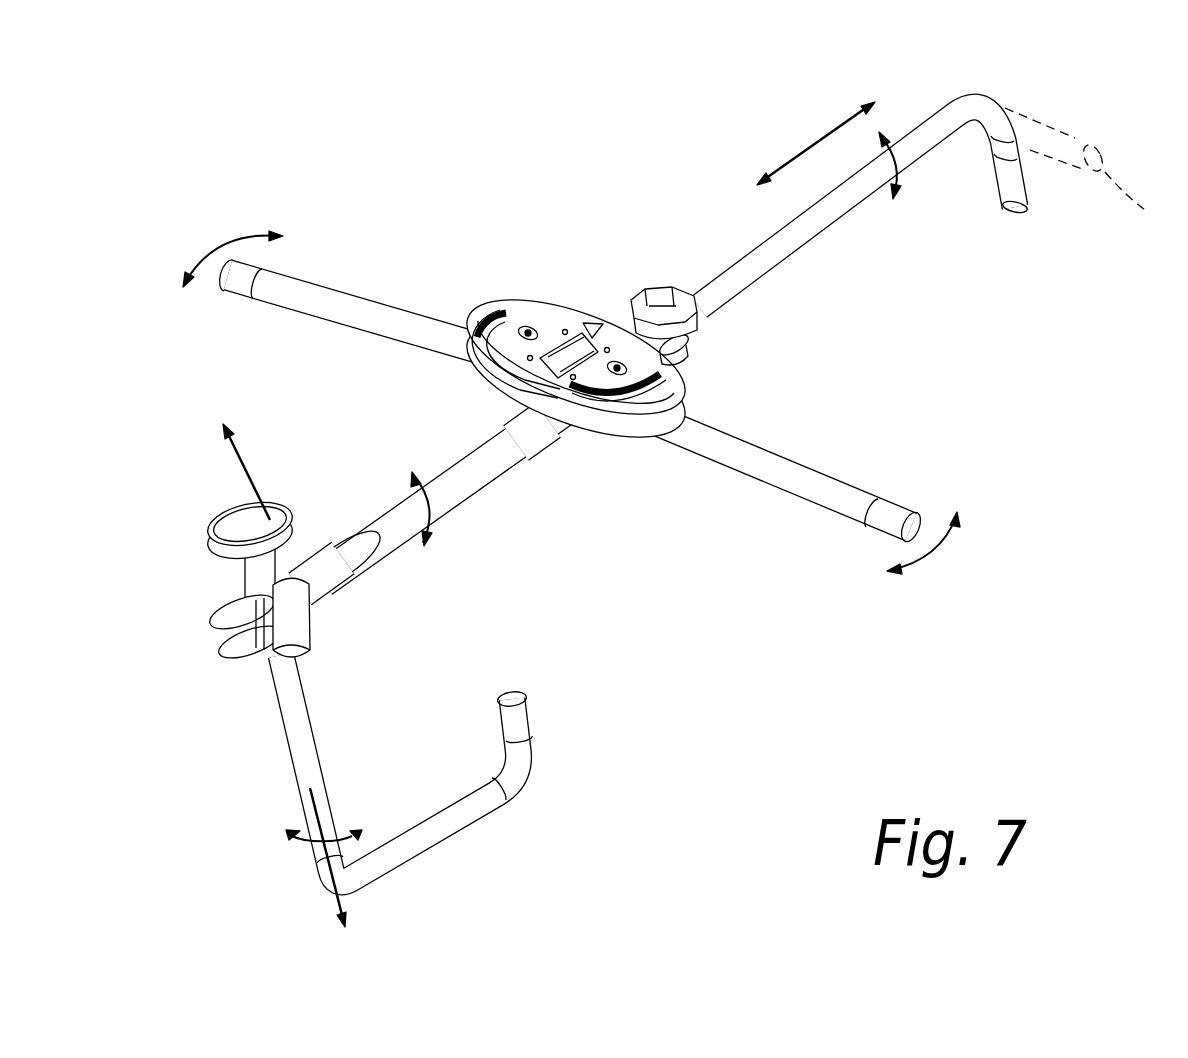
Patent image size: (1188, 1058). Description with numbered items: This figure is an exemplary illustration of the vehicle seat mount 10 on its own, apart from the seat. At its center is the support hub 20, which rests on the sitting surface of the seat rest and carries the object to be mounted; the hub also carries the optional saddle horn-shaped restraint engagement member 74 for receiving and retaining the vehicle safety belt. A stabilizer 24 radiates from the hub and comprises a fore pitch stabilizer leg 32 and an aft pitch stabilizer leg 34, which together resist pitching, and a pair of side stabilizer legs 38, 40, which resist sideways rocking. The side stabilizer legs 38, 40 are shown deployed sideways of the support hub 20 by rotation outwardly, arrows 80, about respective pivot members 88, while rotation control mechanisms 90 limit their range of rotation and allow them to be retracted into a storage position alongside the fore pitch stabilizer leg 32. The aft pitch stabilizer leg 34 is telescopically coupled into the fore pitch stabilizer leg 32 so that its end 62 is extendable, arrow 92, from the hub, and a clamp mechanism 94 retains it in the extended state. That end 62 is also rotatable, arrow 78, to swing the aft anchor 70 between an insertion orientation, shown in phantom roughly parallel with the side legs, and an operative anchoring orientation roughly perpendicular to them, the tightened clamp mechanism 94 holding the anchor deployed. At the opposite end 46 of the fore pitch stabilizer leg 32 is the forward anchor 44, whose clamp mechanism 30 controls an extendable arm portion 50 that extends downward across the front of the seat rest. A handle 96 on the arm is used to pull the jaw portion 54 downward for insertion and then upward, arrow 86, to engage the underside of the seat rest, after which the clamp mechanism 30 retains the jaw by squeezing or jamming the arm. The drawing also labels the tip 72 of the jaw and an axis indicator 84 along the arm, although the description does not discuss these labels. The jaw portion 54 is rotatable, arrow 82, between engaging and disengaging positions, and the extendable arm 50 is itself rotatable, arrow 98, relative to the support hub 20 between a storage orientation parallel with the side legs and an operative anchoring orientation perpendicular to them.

The vehicle seat mount 10 is at (312, 146).
The support hub 20 is at (598, 430).
The stabilizer 24 is at (697, 452).
The clamp mechanism 30 is at (240, 610).
The fore pitch stabilizer leg 32 is at (480, 470).
The aft pitch stabilizer leg 34 is at (758, 258).
The side stabilizer leg 38 is at (366, 325).
The side stabilizer leg 40 is at (802, 478).
The forward anchor 44 is at (290, 748).
The end of fore pitch stabilizer leg 46 is at (350, 553).
The extendable arm portion 50 is at (288, 688).
The jaw portion 54 is at (432, 838).
The end of aft pitch stabilizer leg 62 is at (953, 115).
The aft anchor 70 is at (1017, 195).
The hook tip 72 is at (512, 690).
The restraint engagement member 74 is at (513, 368).
The arrow 78 is at (895, 184).
The arrows 80 is at (571, 400).
The arrow 82 is at (309, 839).
The axis arrow 84 is at (318, 812).
The arrow 86 is at (239, 458).
The pivot members 88 is at (528, 325).
The rotation control mechanisms 90 is at (482, 310).
The arrow 92 is at (832, 133).
The clamp mechanism 94 is at (700, 356).
The handle 96 is at (228, 518).
The arrow 98 is at (426, 526).